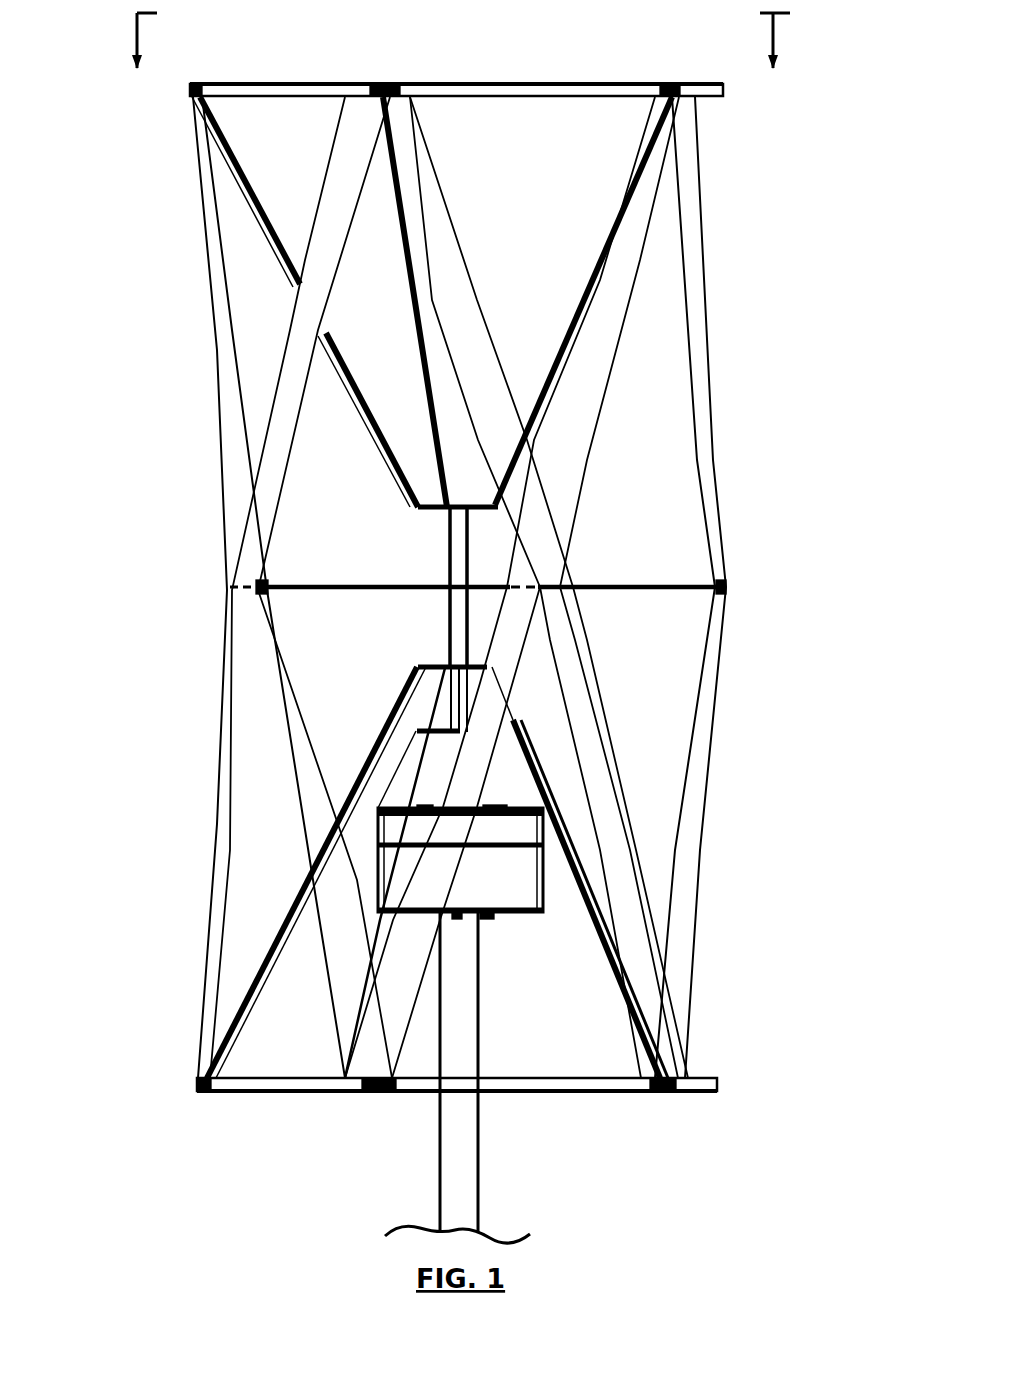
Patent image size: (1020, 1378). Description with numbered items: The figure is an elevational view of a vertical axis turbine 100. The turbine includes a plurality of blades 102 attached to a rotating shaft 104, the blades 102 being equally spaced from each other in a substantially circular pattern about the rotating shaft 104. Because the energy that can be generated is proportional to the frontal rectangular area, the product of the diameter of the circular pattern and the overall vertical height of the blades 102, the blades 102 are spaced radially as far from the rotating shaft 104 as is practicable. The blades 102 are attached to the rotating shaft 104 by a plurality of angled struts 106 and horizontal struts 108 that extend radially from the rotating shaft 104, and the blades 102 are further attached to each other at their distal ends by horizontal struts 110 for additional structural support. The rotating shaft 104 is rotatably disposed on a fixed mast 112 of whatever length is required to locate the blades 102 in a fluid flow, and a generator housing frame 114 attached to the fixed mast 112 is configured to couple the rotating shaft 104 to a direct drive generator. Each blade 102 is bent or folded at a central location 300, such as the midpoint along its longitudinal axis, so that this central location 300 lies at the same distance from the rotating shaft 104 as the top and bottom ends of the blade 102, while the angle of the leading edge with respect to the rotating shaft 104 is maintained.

The vertical axis turbine 100 is at (821, 1108).
The blades 102 is at (315, 205).
The rotating shaft 104 is at (445, 548).
The angled struts 106 is at (578, 290).
The horizontal struts 108 is at (355, 592).
The horizontal struts 110 is at (300, 80).
The fixed mast 112 is at (437, 1190).
The generator housing frame 114 is at (522, 922).
The central location 300 is at (540, 585).